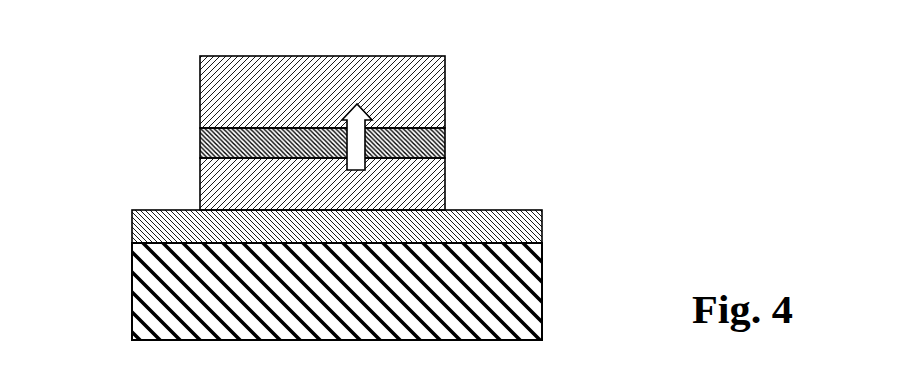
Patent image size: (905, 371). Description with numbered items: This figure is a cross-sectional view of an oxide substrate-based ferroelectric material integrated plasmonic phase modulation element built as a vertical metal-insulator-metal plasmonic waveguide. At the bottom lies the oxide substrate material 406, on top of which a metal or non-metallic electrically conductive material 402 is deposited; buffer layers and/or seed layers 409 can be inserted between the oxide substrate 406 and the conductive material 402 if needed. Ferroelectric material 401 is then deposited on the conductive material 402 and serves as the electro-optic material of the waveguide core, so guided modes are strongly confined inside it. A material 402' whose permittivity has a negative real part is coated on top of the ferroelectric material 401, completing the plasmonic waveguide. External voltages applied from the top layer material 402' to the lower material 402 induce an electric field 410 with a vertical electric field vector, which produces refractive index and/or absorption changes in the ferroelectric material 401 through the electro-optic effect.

The ferroelectric material 401 is at (413, 147).
The metal or non-metallic electrically conductive material 402 is at (271, 179).
The material having a permittivity with a negative real part 402' is at (271, 94).
The oxide substrate material 406 is at (143, 291).
The buffer layers and/or seed layers 409 is at (148, 228).
The electric field 410 is at (353, 137).